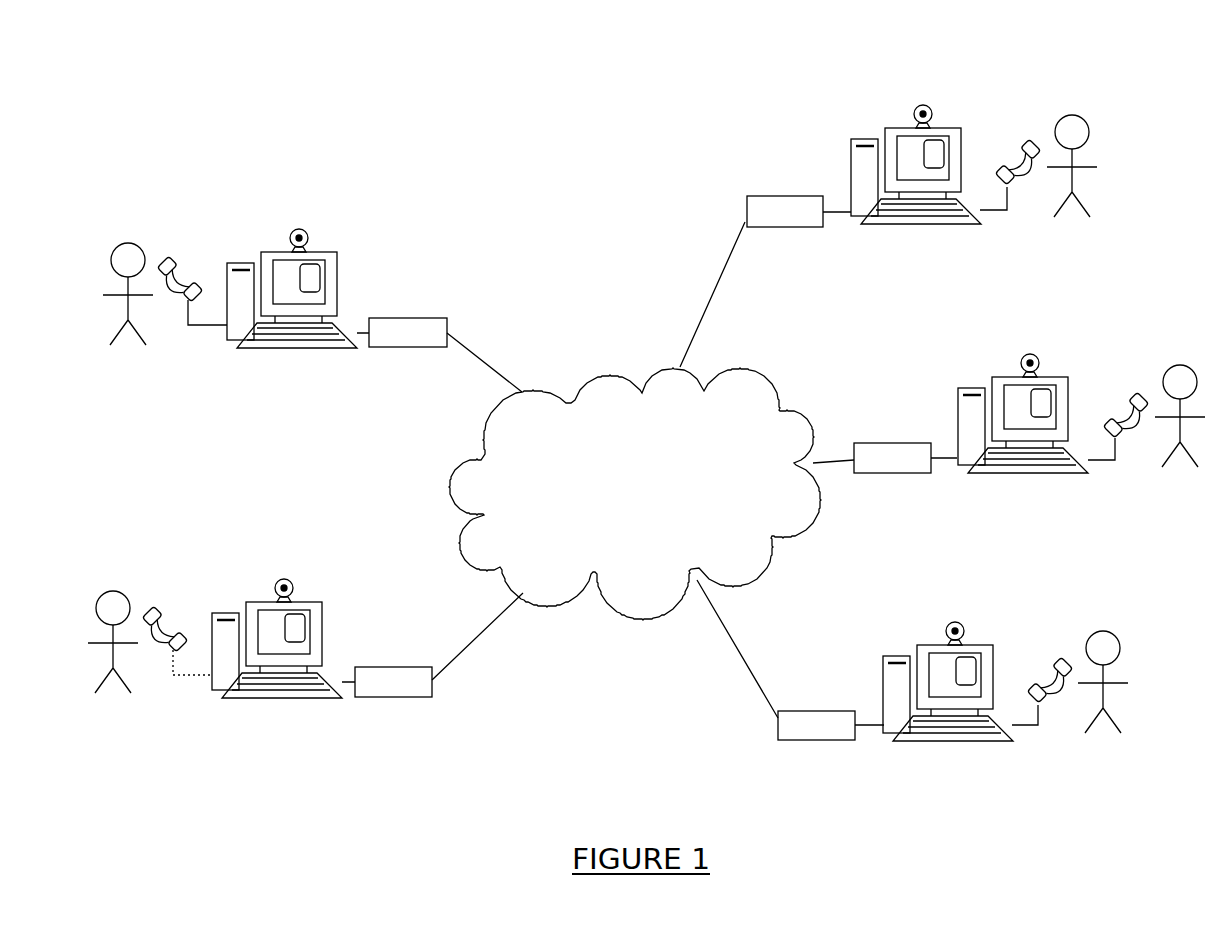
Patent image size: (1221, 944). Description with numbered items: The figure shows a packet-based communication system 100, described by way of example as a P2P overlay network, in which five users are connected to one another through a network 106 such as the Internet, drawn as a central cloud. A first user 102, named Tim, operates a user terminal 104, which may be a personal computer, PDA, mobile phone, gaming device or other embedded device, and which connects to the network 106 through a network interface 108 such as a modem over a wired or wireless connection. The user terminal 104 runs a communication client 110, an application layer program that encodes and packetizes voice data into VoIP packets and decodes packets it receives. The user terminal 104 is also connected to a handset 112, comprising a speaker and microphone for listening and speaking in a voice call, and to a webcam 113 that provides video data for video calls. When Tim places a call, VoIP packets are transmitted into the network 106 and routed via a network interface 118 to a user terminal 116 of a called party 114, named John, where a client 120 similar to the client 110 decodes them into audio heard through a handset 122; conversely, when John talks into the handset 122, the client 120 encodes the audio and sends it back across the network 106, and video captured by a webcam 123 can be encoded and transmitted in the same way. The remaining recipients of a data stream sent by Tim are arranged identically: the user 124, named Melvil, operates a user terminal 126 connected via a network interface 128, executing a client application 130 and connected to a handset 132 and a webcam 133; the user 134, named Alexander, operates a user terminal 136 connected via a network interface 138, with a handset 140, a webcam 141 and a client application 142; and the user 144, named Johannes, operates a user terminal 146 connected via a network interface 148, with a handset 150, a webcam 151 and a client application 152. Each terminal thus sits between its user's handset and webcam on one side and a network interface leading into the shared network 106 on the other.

The packet-based communication system 100 is at (257, 109).
The first user 102 is at (1180, 365).
The user terminal 104 is at (1002, 375).
The network 106 is at (452, 485).
The network interface 108 is at (893, 443).
The communication client 110 is at (1045, 390).
The handset 112 is at (1128, 392).
The webcam 113 is at (1035, 352).
The called party 114 is at (113, 591).
The user terminal 116 is at (257, 600).
The network interface 118 is at (390, 667).
The client 120 is at (297, 614).
The handset 122 is at (160, 605).
The webcam 123 is at (286, 576).
The user 124 is at (128, 243).
The user terminal 126 is at (272, 250).
The network interface 128 is at (405, 318).
The client application 130 is at (312, 264).
The handset 132 is at (175, 255).
The webcam 133 is at (302, 228).
The user 134 is at (1072, 115).
The user terminal 136 is at (897, 127).
The network interface 138 is at (785, 196).
The handset 140 is at (1020, 142).
The webcam 141 is at (926, 103).
The client application 142 is at (937, 141).
The user 144 is at (1103, 631).
The user terminal 146 is at (927, 643).
The network interface 148 is at (817, 711).
The handset 150 is at (1052, 657).
The webcam 151 is at (958, 619).
The client application 152 is at (968, 657).